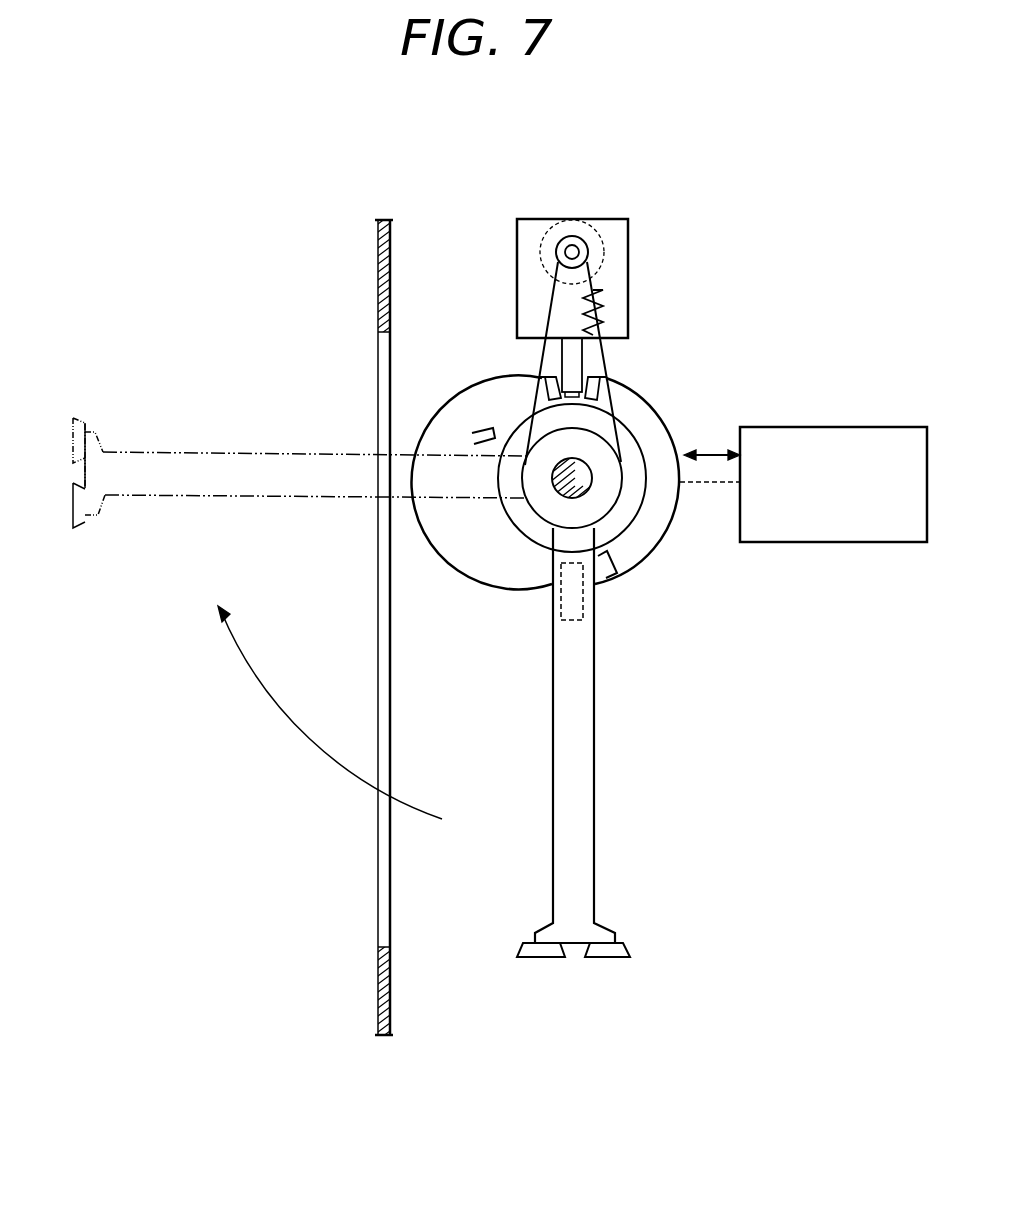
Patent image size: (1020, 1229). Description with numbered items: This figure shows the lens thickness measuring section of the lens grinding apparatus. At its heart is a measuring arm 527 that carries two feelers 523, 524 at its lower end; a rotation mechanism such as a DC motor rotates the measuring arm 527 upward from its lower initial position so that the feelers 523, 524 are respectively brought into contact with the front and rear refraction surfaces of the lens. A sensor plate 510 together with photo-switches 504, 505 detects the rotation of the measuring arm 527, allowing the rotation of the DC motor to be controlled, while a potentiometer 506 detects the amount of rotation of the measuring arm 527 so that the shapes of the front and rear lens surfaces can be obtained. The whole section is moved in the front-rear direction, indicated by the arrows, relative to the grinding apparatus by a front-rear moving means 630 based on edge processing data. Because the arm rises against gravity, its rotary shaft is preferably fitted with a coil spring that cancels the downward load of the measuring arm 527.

The photo-switch 504 is at (583, 610).
The photo-switch 505 is at (578, 362).
The potentiometer 506 is at (556, 222).
The sensor plate 510 is at (630, 558).
The feeler 523 is at (540, 957).
The feeler 524 is at (608, 957).
The measuring arm 527 is at (594, 800).
The front-rear moving means 630 is at (862, 427).